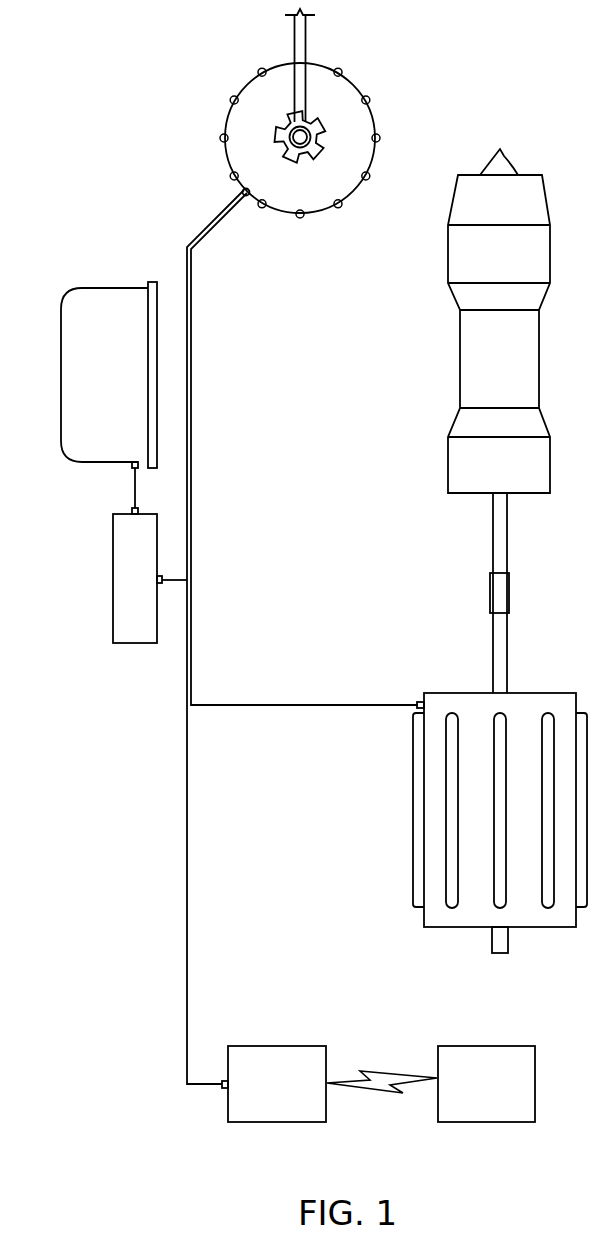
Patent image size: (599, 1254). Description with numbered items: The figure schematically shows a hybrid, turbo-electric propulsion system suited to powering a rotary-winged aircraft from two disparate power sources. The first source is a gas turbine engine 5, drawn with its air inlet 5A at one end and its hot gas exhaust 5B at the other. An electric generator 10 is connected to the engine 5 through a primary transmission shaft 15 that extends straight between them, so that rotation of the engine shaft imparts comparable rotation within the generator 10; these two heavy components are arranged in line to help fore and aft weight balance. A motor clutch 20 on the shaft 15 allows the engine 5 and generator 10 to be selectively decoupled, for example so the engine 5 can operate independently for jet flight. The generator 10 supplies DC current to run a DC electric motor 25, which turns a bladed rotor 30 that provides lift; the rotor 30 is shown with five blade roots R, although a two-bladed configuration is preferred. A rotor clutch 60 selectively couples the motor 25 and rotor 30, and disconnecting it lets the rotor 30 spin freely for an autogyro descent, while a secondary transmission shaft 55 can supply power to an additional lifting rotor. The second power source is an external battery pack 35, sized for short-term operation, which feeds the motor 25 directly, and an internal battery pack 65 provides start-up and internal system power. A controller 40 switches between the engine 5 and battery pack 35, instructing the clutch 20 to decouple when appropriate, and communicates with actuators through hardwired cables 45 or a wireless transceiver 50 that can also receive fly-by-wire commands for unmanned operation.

The gas turbine engine 5 is at (540, 359).
The air inlet 5A is at (534, 495).
The hot gas exhaust 5B is at (505, 170).
The electric generator 10 is at (418, 815).
The primary transmission shaft 15 is at (506, 559).
The motor clutch 20 is at (490, 592).
The DC electric motor 25 is at (236, 155).
The bladed rotor 30 is at (345, 179).
The external battery pack 35 is at (66, 372).
The controller 40 is at (267, 1055).
The cables 45 is at (201, 1089).
The wireless transceiver 50 is at (486, 1052).
The secondary transmission shaft 55 is at (306, 30).
The rotor clutch 60 is at (310, 157).
The internal battery pack 65 is at (120, 582).
The blade roots R is at (278, 123).